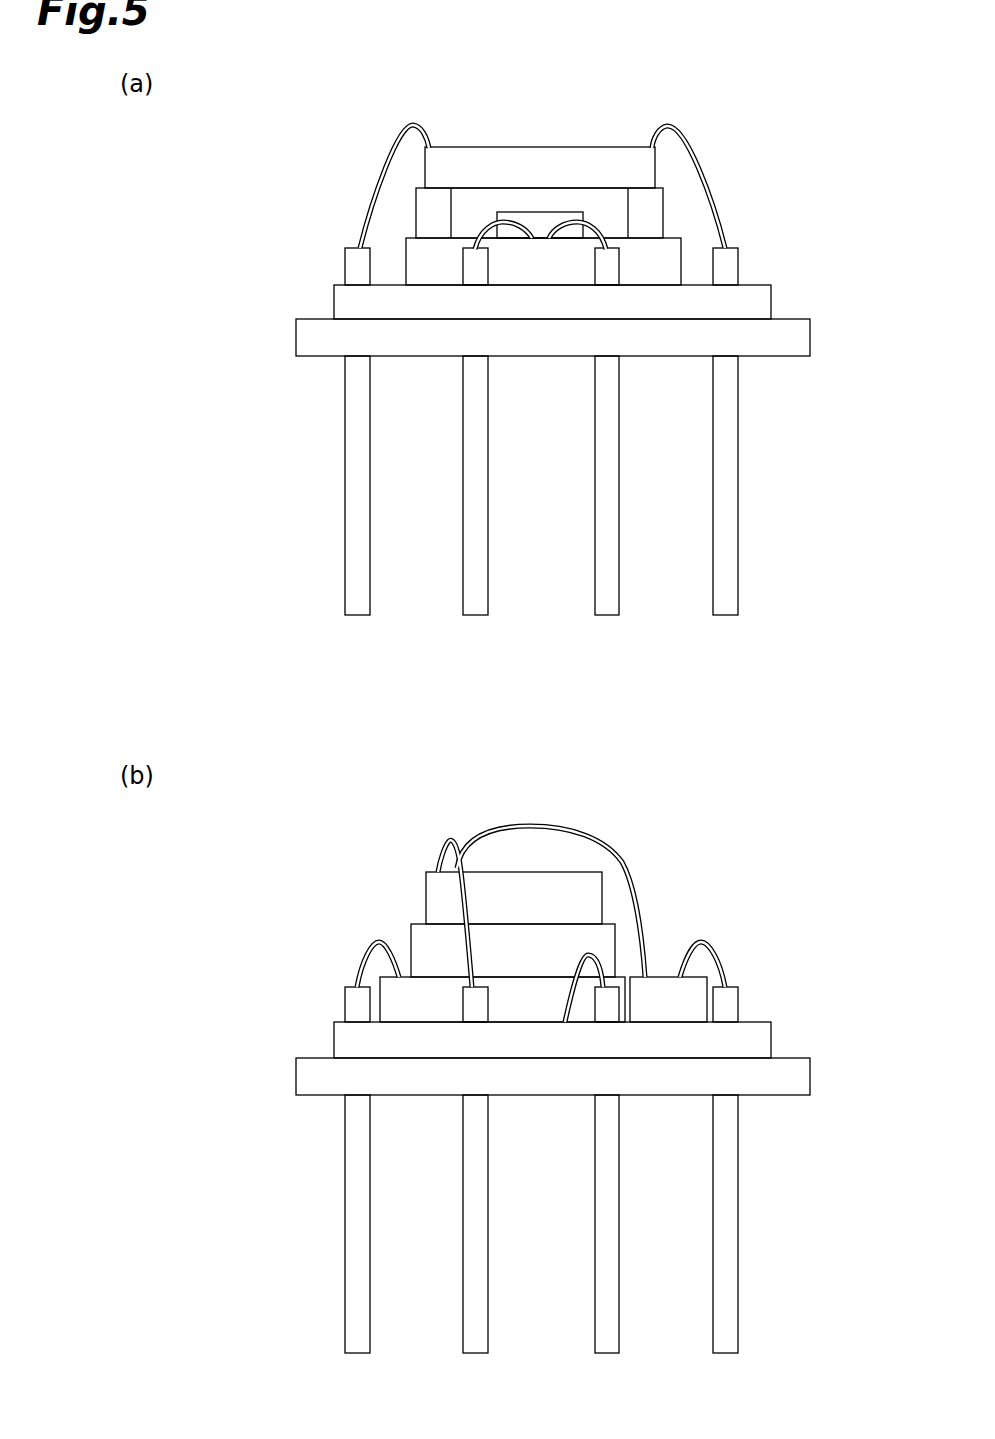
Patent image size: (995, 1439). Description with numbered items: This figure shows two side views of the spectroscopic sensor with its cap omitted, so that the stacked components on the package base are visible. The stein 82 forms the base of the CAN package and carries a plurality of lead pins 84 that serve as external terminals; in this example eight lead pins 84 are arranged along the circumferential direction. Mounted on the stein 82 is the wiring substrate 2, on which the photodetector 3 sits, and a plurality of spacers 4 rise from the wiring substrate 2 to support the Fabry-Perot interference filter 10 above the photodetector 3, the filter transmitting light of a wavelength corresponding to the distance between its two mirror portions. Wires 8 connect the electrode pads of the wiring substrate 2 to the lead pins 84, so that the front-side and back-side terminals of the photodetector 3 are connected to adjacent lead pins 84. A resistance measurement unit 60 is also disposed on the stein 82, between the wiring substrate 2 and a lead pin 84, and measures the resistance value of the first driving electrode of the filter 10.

The wiring substrate 2 is at (663, 263).
The photodetector 3 is at (537, 222).
The spacer 4 is at (430, 200).
The wire 8 is at (382, 157).
The Fabry-Perot interference filter 10 is at (618, 162).
The resistance measurement unit 60 is at (653, 988).
The stein 82 is at (758, 303).
The lead pin 84 is at (357, 438).